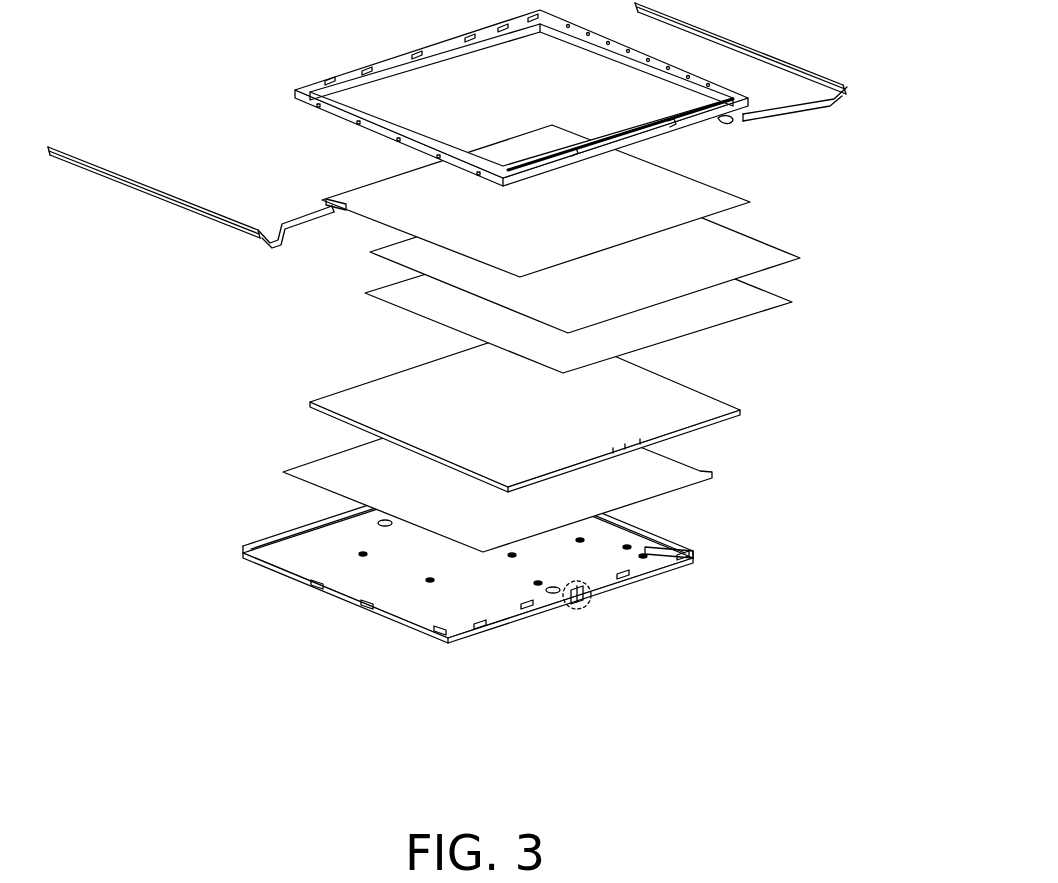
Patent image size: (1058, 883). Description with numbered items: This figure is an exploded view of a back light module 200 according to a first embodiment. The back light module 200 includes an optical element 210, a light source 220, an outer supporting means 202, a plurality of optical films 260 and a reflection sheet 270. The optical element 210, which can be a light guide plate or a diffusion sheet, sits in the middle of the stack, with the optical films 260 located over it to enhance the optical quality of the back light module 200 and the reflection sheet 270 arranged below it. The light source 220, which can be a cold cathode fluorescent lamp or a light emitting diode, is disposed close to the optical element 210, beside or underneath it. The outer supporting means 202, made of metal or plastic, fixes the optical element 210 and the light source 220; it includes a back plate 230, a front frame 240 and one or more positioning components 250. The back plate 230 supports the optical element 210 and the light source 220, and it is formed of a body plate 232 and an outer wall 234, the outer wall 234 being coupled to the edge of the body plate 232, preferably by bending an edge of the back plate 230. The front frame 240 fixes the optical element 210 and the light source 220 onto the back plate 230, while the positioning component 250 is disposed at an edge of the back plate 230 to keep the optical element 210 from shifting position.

The back light module 200 is at (501, 380).
The outer supporting means 202 is at (501, 326).
The optical element 210 is at (741, 411).
The light source 220 is at (780, 65).
The back plate 230 is at (567, 554).
The body plate 232 is at (653, 555).
The outer wall 234 is at (633, 578).
The front frame 240 is at (728, 122).
The positioning component 250 is at (588, 601).
The optical films 260 is at (810, 195).
The reflection sheet 270 is at (705, 480).